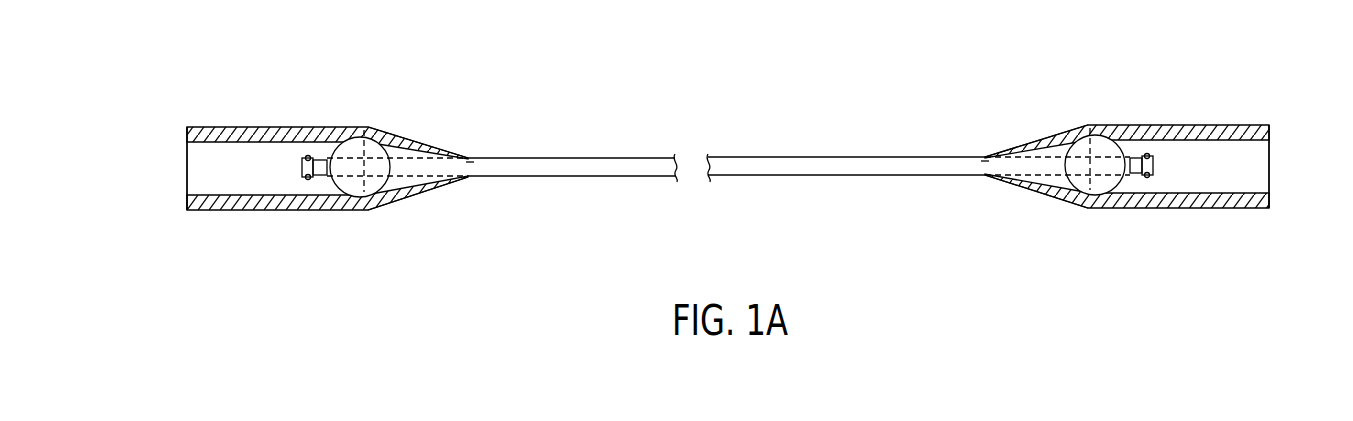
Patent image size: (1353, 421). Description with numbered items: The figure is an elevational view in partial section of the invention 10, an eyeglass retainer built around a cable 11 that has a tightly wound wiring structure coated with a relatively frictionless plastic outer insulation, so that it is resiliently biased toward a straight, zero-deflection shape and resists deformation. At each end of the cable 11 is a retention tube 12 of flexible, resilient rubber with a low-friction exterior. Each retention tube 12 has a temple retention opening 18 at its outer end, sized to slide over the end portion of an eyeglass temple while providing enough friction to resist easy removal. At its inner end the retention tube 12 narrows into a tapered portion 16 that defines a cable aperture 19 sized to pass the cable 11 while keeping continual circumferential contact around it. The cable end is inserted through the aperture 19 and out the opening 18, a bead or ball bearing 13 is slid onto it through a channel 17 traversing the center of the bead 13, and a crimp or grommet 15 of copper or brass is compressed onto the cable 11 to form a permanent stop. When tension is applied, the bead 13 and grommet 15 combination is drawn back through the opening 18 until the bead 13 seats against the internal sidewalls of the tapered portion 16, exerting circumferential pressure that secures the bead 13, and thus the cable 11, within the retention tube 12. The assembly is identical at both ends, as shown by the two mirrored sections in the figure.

The invention 10 is at (738, 78).
The cable 11 is at (653, 165).
The retention tube 12 is at (290, 104).
The bead or ball bearing 13 is at (360, 190).
The crimp or grommet 15 is at (313, 178).
The tapered portion 16 is at (413, 142).
The channel 17 is at (367, 127).
The temple retention opening 18 is at (173, 167).
The cable aperture 19 is at (470, 166).